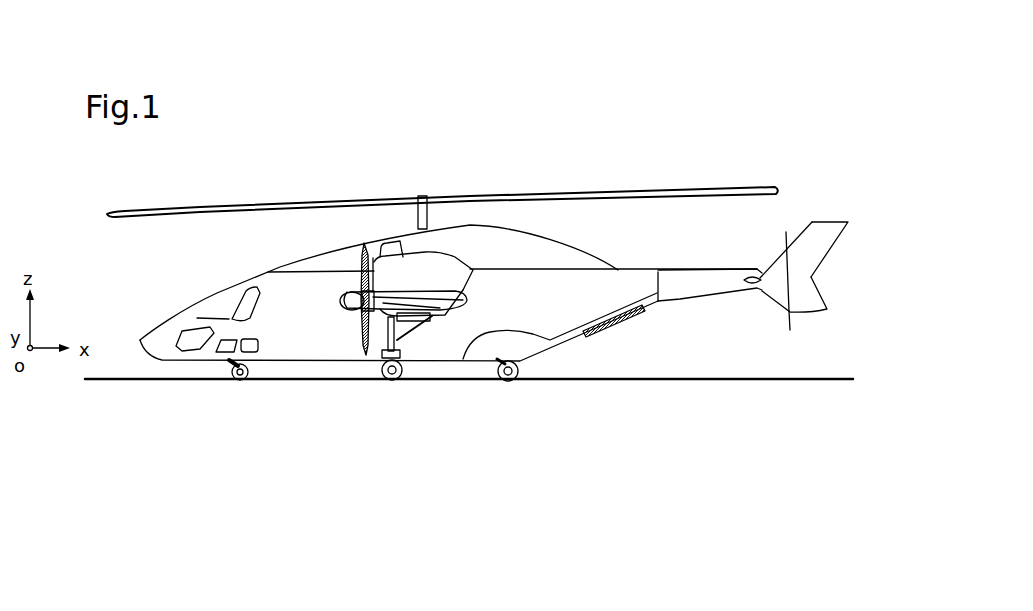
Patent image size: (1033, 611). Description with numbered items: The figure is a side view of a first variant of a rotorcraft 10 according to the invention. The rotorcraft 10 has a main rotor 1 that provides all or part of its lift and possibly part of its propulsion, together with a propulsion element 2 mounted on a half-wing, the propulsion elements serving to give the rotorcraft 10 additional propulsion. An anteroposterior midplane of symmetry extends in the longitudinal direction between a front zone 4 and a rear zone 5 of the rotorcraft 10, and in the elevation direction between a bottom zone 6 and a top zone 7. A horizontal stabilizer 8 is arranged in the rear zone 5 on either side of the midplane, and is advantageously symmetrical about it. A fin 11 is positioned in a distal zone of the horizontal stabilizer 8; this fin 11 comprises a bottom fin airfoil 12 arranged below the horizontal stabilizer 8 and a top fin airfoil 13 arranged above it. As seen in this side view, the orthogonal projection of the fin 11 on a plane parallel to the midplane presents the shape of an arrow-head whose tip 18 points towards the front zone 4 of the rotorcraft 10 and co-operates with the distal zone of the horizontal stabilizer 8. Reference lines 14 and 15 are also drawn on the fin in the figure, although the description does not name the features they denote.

The main rotor 1 is at (298, 199).
The propulsion element 2 is at (358, 277).
The front zone 4 is at (146, 306).
The rear zone 5 is at (785, 278).
The bottom zone 6 is at (455, 413).
The top zone 7 is at (442, 158).
The horizontal stabilizer 8 is at (753, 277).
The rotorcraft 10 is at (160, 412).
The left fin 11 is at (838, 180).
The left bottom fin airfoil 12 is at (810, 303).
The left top fin airfoil 13 is at (786, 232).
The fin hinge line 14 is at (790, 330).
The fin leading edge 15 is at (787, 262).
The tip 18 is at (745, 290).